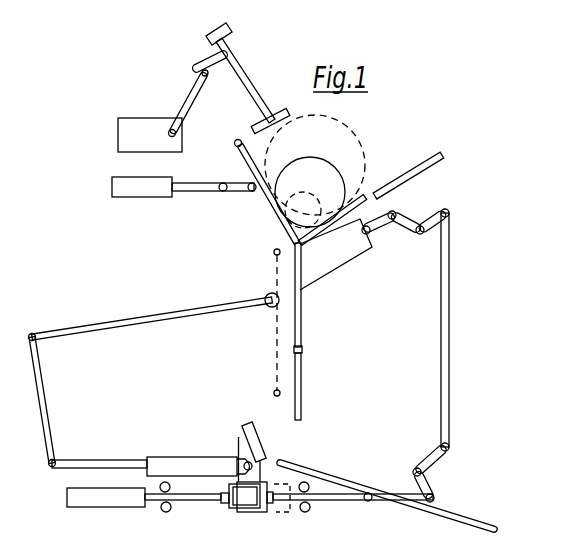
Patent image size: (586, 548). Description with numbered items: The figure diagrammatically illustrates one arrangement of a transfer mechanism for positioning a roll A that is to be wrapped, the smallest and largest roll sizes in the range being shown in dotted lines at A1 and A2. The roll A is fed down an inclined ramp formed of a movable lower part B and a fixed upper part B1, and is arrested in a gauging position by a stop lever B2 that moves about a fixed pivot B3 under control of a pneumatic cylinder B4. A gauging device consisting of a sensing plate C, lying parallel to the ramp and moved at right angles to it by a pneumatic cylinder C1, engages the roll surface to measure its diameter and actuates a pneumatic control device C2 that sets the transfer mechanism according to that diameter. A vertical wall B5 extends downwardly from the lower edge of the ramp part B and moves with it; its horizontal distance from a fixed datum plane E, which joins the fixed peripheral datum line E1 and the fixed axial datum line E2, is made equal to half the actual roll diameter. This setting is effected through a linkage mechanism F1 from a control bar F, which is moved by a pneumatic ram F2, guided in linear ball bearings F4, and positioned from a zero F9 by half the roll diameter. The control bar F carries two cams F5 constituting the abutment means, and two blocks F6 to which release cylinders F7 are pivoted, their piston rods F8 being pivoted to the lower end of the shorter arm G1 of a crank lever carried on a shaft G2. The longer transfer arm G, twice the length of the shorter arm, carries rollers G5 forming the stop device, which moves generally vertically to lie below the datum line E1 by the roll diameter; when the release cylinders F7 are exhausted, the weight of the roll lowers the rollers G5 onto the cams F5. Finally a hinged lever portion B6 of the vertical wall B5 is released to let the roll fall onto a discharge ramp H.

The roll A is at (342, 164).
The smallest roll size A1 is at (310, 191).
The largest roll size A2 is at (346, 129).
The lower ramp part B is at (361, 196).
The upper ramp part B1 is at (410, 168).
The stop lever B2 is at (274, 215).
The fixed pivot B3 is at (236, 140).
The pneumatic cylinder B4 is at (153, 192).
The vertical wall B5 is at (302, 315).
The hinged lever portion B6 is at (302, 394).
The sensing plate C is at (278, 114).
The pneumatic cylinder C1 is at (222, 79).
The pneumatic control device C2 is at (132, 133).
The fixed datum plane E is at (276, 330).
The fixed peripheral datum line E1 is at (273, 252).
The fixed axial datum line E2 is at (273, 393).
The control bar F is at (252, 514).
The linkage mechanism F1 is at (450, 326).
The pneumatic ram F2 is at (98, 502).
The linear ball bearings F4 is at (162, 511).
The cams F5 is at (265, 443).
The blocks F6 is at (250, 474).
The release cylinder F7 is at (190, 458).
The piston rod F8 is at (94, 460).
The zero F9 is at (279, 509).
The transfer arm G is at (182, 312).
The shorter arm G1 is at (43, 388).
The shaft G2 is at (35, 334).
The rollers G5 is at (267, 294).
The discharge ramp H is at (460, 521).